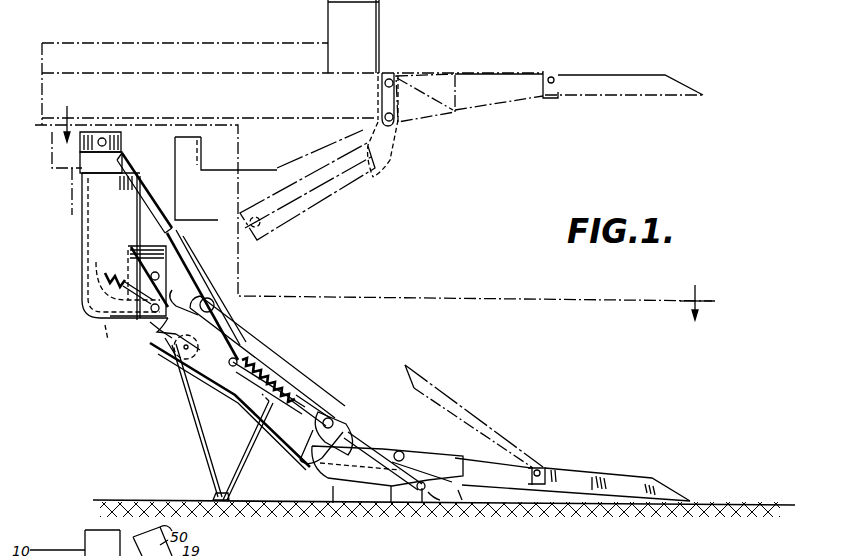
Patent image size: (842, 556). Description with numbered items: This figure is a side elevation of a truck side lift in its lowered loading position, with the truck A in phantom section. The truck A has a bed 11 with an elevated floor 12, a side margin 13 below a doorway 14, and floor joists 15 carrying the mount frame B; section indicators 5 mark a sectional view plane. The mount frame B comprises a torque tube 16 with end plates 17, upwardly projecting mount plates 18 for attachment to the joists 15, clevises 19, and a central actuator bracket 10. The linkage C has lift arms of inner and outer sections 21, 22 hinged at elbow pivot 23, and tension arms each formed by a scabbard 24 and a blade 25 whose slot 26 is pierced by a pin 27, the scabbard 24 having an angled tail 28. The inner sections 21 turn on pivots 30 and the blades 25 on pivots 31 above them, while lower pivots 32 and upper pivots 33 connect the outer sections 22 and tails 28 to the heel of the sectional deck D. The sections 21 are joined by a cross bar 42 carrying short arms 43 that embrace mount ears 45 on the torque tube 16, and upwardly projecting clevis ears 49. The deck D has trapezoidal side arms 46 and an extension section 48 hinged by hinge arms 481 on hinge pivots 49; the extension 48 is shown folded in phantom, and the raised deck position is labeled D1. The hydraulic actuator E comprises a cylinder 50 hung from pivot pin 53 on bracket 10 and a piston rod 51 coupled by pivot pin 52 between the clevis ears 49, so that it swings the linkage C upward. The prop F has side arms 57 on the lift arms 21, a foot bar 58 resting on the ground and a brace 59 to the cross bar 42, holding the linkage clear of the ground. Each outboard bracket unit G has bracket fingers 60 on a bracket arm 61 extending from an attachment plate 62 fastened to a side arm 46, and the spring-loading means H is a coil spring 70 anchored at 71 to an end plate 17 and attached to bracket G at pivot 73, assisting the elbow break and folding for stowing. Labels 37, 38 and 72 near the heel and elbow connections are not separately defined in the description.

The section line 5- 5 is at (382, 223).
The actuator bracket 10 is at (88, 162).
The bed 11 is at (95, 70).
The elevated floor 12 is at (127, 42).
The side margin 13 is at (374, 88).
The doorway 14 is at (379, 21).
The floor joists 15 is at (276, 178).
The torque tube 16 is at (106, 321).
The end plates 17 is at (100, 260).
The mount plates 18 is at (84, 216).
The clevises 19 is at (135, 245).
The inner lift arm section 21 is at (204, 386).
The outer lift arm section 22 is at (330, 484).
The elbow pivot 23 is at (332, 420).
The scabbard 24 is at (328, 208).
The blade 25 is at (222, 333).
The longitudinal slot 26 is at (250, 346).
The pin 27 is at (247, 361).
The scabbard tail 28 is at (389, 148).
The pivots 30 is at (152, 332).
The pivots 31 is at (170, 243).
The lower pivots 32 is at (391, 503).
The upper pivots 33 is at (401, 451).
The foot 37 is at (332, 503).
The lug 38 is at (328, 411).
The cross bar 42 is at (168, 356).
The short arms 43 is at (150, 350).
The mount ears 45 is at (107, 340).
The side arms 46 is at (517, 74).
The extension deck section 48 is at (612, 74).
The hinge arms 481 is at (595, 477).
The clevis ears 49 is at (552, 74).
The cylinder 50 is at (140, 179).
The piston rod 51 is at (200, 285).
The pivot pin 52 is at (228, 307).
The pivot pin 53 is at (104, 138).
The side arms 57 is at (240, 471).
The foot bar 58 is at (214, 498).
The brace 59 is at (205, 447).
The bracket fingers 60 is at (432, 503).
The outboard bracket arm 61 is at (460, 500).
The attachment plate 62 is at (448, 462).
The coil spring 70 is at (297, 398).
The spring anchor 71 is at (104, 280).
The link 72 is at (368, 447).
The attachment pivots 73 is at (420, 503).
The truck A is at (185, 42).
The mount frame B is at (79, 239).
The parallel arm linkage C is at (291, 375).
The sectional deck D is at (486, 486).
The direction arrow D1 is at (618, 75).
The hydraulic actuator E is at (166, 182).
The prop F is at (247, 452).
The outboard bracket units G is at (437, 119).
The spring-loading means H is at (350, 432).